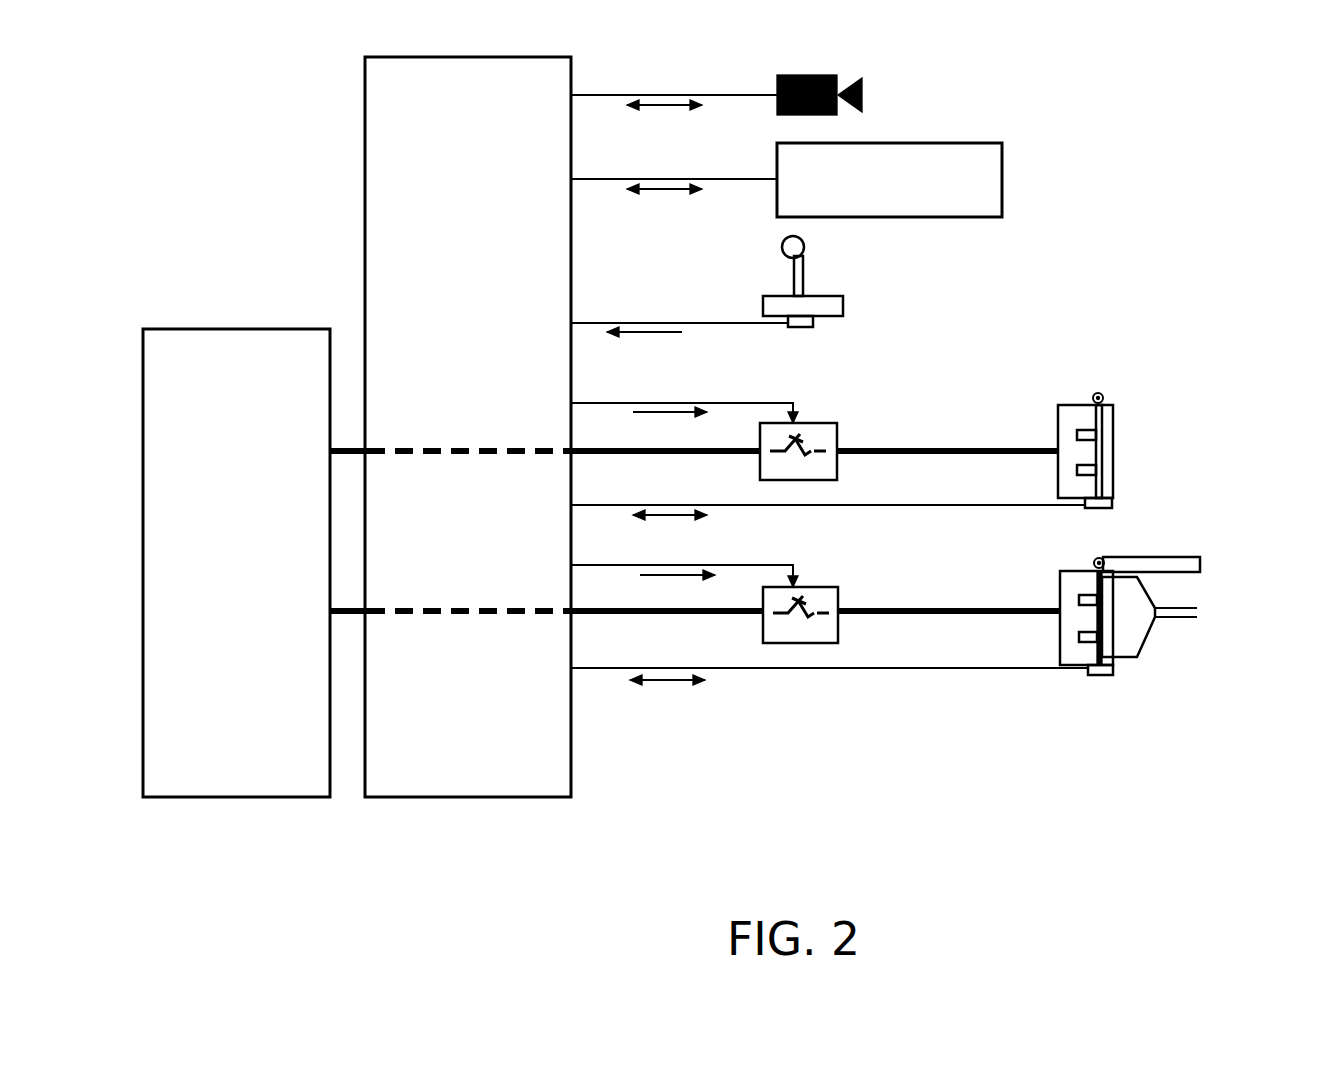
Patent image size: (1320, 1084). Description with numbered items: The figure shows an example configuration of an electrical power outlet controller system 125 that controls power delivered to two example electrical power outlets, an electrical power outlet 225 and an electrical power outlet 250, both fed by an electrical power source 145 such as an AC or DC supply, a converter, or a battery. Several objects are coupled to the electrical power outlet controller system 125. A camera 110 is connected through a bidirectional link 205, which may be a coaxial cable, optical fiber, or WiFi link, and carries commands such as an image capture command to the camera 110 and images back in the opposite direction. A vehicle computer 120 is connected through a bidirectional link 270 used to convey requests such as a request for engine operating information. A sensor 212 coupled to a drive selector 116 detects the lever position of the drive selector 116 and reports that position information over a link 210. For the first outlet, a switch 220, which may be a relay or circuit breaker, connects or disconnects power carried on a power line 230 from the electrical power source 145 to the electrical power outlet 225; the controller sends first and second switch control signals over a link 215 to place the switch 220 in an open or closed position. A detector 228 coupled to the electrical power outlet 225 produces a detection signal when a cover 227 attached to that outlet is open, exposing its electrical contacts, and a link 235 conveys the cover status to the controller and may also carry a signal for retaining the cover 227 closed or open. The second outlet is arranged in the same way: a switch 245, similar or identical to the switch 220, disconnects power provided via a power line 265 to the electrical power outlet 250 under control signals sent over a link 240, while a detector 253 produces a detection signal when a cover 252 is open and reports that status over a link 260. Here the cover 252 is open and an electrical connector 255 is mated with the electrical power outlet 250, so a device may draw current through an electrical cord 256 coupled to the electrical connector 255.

The camera 110 is at (822, 73).
The drive selector 116 is at (843, 279).
The vehicle computer 120 is at (955, 175).
The electrical power outlet controller system 125 is at (516, 93).
The electrical power source 145 is at (322, 360).
The bidirectional link 205 is at (660, 95).
The link 210 is at (632, 323).
The sensor 212 is at (798, 327).
The link 215 is at (588, 403).
The switch 220 is at (818, 423).
The electrical power outlet 225 is at (1135, 397).
The cover 227 is at (1113, 451).
The detector 228 is at (1097, 508).
The power line 230 is at (600, 451).
The link 235 is at (735, 505).
The link 240 is at (590, 565).
The switch 245 is at (822, 587).
The electrical power outlet 250 is at (1210, 530).
The cover 252 is at (1200, 565).
The detector 253 is at (1102, 675).
The electrical connector 255 is at (1155, 645).
The electrical cord 256 is at (1187, 618).
The link 260 is at (782, 668).
The power line 265 is at (635, 613).
The bidirectional link 270 is at (660, 179).